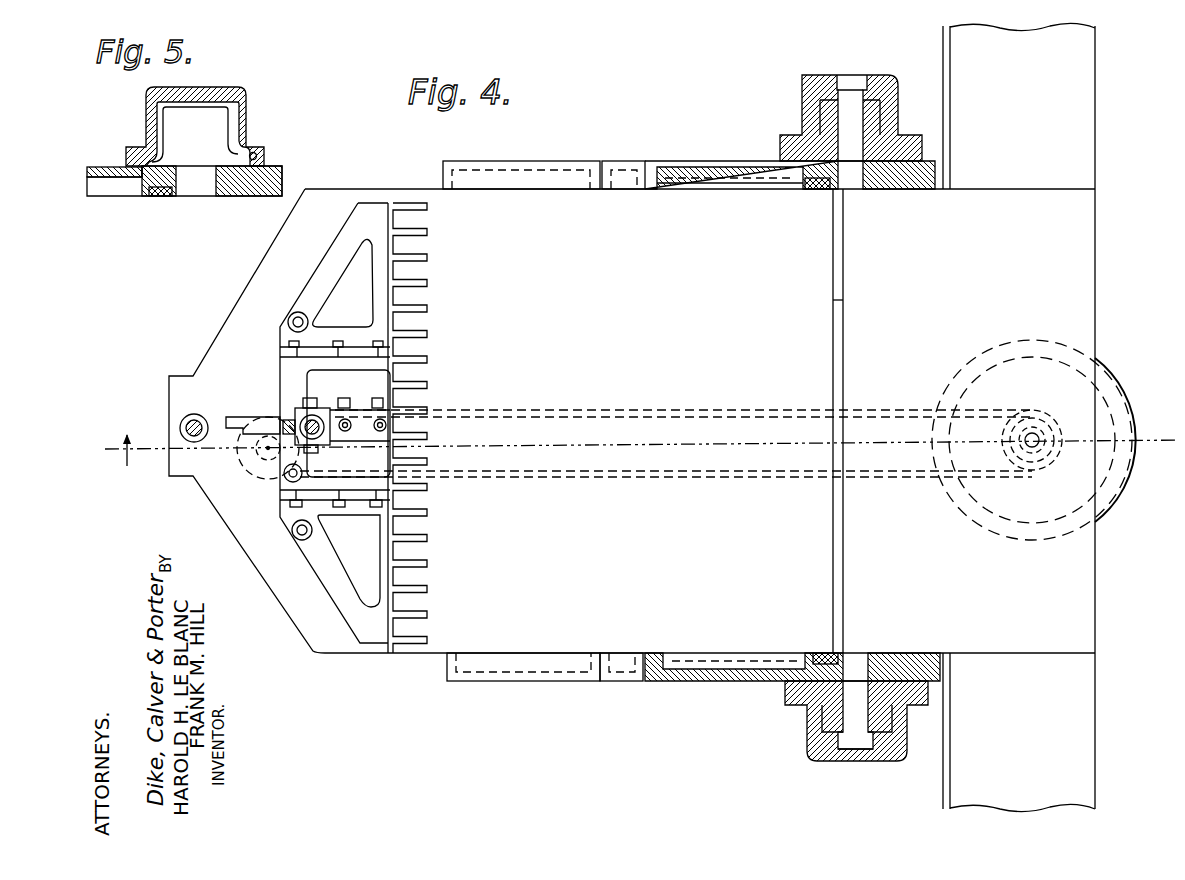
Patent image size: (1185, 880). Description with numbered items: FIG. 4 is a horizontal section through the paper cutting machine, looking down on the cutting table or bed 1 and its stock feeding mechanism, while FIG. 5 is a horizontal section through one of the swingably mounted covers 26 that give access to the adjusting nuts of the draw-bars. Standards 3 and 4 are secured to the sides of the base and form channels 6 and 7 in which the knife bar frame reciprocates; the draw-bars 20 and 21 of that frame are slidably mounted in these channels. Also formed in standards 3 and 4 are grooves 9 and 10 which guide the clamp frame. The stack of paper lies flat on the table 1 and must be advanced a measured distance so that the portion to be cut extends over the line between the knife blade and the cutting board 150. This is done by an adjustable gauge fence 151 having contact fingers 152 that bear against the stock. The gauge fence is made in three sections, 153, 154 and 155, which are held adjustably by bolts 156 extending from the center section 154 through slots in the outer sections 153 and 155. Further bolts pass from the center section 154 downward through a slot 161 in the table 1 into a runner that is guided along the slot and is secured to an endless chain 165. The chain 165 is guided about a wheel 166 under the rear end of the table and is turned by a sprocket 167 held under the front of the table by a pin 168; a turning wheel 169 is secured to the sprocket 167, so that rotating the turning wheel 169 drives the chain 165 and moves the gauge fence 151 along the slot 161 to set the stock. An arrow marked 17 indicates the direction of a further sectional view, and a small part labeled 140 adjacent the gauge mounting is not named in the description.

In FIG. 4, the cutting table 1 is at (515, 630).
In FIG. 4, the standard 3 is at (892, 652).
In FIG. 5, the standard 4 is at (246, 176).
In FIG. 4, the standard 4 is at (900, 182).
In FIG. 4, the channel 6 is at (805, 719).
In FIG. 4, the channel 7 is at (884, 118).
In FIG. 4, the groove 9 is at (826, 652).
In FIG. 5, the groove 10 is at (148, 189).
In FIG. 4, the groove 10 is at (816, 190).
In FIG. 4, the section line arrow 17 is at (628, 440).
In FIG. 4, the draw-bar 20 is at (807, 749).
In FIG. 4, the draw-bar 21 is at (867, 130).
In FIG. 5, the cover 26 is at (239, 93).
In FIG. 4, the terminal rail 140 is at (381, 432).
In FIG. 4, the cutting board 150 is at (845, 305).
In FIG. 4, the gauge fence 151 is at (325, 617).
In FIG. 4, the contact fingers 152 is at (428, 283).
In FIG. 4, the section 153 is at (358, 212).
In FIG. 4, the center section 154 is at (285, 372).
In FIG. 4, the section 155 is at (370, 625).
In FIG. 4, the bolts 156 is at (377, 341).
In FIG. 4, the slot 161 is at (540, 412).
In FIG. 4, the endless chain 165 is at (590, 480).
In FIG. 4, the wheel 166 is at (286, 477).
In FIG. 4, the sprocket 167 is at (1028, 450).
In FIG. 4, the pin 168 is at (1040, 450).
In FIG. 4, the turning wheel 169 is at (1112, 505).